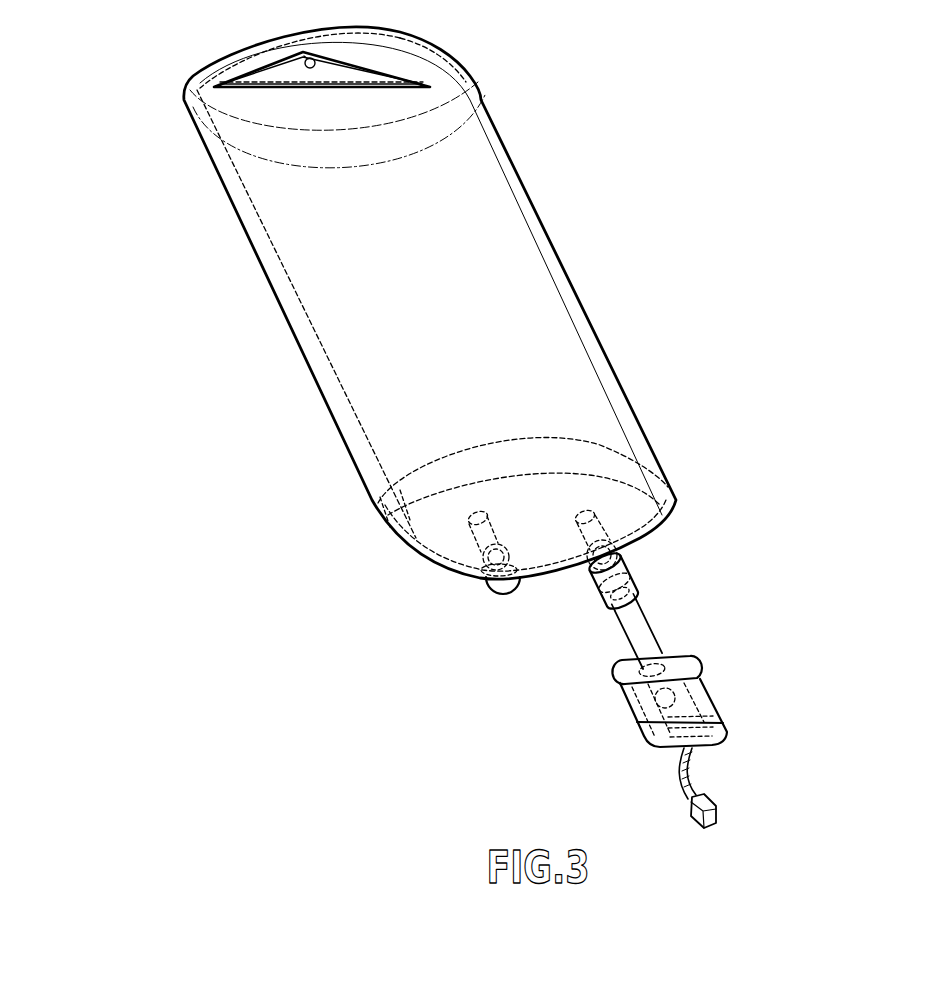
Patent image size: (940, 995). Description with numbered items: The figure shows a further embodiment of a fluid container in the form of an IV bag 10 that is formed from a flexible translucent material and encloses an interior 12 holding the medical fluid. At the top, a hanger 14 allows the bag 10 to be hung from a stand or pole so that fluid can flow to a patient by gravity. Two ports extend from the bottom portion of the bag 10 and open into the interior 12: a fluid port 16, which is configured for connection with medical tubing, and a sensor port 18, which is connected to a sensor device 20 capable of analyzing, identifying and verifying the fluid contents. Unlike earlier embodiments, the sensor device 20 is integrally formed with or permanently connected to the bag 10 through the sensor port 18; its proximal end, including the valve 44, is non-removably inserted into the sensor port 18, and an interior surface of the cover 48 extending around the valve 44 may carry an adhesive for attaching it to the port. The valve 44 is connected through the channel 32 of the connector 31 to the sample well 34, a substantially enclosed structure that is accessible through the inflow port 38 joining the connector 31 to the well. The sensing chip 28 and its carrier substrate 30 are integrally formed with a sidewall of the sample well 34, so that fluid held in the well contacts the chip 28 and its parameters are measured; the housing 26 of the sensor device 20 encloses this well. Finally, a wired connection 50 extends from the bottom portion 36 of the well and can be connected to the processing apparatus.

The IV bag 10 is at (174, 62).
The interior volume 12 is at (453, 336).
The hanger 14 is at (473, 87).
The fluid port 16 is at (497, 587).
The sensor port 18 is at (622, 565).
The sensor device 20 is at (820, 515).
The housing 26 is at (643, 735).
The sensing chip 28 is at (675, 692).
The carrier substrate 30 is at (725, 722).
The connector 31 is at (614, 641).
The channel 32 is at (640, 624).
The sample well 34 is at (642, 710).
The bottom portion 36 is at (717, 738).
The inflow port 38 is at (657, 673).
The valve 44 is at (640, 593).
The cover 48 is at (612, 590).
The wired connection 50 is at (690, 788).